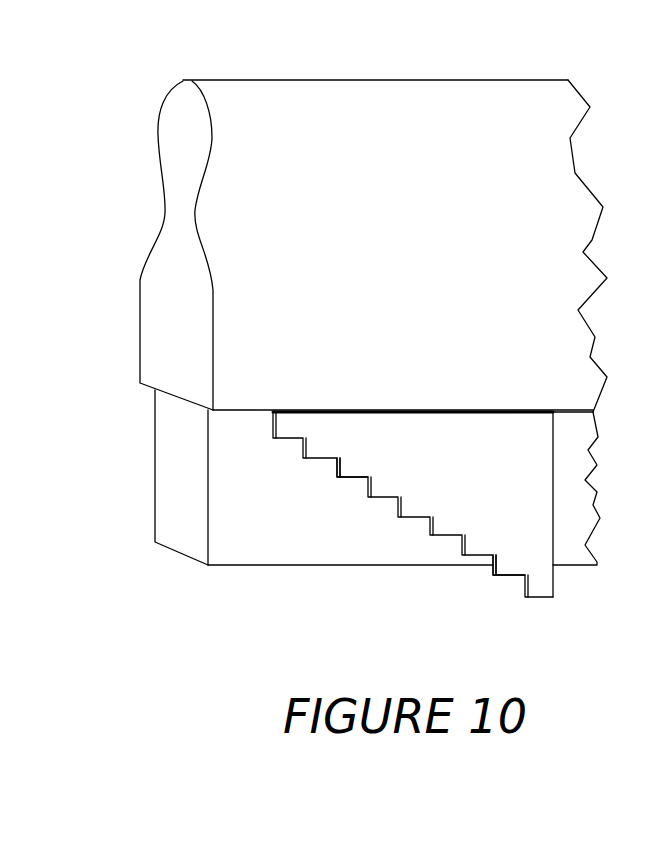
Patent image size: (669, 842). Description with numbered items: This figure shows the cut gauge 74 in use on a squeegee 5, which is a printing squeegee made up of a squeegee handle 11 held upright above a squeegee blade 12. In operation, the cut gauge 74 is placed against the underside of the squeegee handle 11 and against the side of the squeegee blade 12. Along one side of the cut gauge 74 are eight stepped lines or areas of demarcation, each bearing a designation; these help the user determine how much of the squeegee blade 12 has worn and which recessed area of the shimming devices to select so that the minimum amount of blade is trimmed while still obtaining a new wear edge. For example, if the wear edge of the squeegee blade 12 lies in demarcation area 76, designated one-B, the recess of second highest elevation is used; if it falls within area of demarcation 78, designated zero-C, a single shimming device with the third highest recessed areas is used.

The squeegee 5 is at (247, 66).
The squeegee handle 11 is at (463, 113).
The squeegee blade 12 is at (222, 480).
The cut gauge 74 is at (553, 507).
The demarcation area 76 is at (492, 568).
The area of demarcation 78 is at (333, 468).